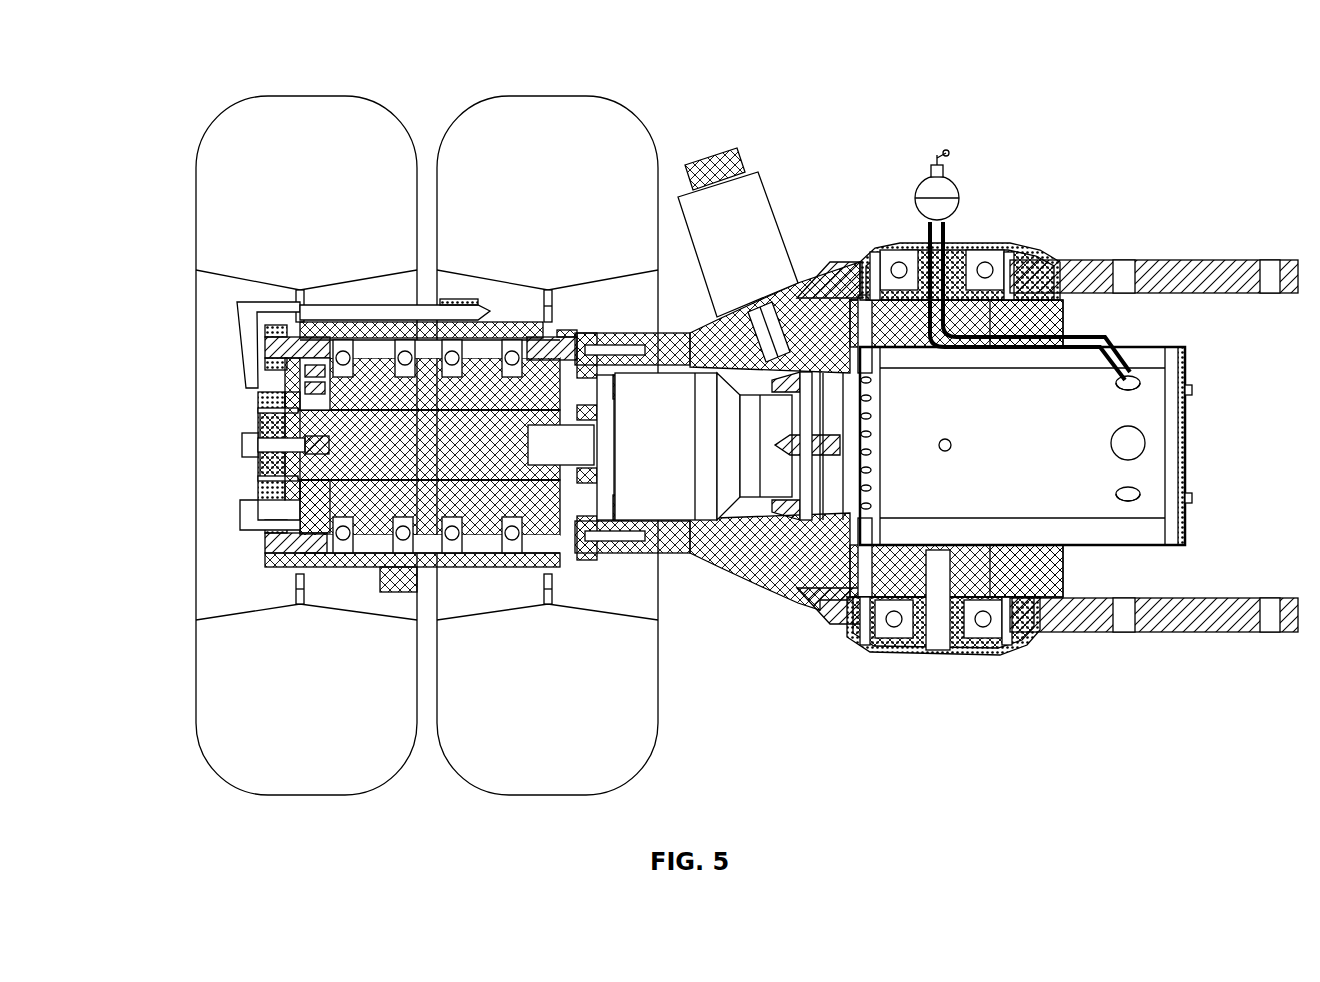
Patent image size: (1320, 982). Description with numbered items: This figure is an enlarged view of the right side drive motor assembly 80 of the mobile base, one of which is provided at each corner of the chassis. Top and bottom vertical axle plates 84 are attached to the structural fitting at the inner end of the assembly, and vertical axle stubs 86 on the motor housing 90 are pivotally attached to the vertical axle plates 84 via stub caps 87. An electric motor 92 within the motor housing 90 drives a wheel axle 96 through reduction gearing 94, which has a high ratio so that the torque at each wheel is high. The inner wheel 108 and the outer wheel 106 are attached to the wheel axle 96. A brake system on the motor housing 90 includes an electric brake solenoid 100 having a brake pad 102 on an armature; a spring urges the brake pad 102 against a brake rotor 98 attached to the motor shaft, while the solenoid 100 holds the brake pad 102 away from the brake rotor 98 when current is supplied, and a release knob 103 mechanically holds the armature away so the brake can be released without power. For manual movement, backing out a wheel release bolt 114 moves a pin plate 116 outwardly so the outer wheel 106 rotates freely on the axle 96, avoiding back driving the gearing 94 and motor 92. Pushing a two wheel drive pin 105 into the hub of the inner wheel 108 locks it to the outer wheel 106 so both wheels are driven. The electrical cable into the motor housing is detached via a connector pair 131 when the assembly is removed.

The drive motor assembly 80 is at (1208, 198).
The vertical axle plates 84 is at (1213, 268).
The vertical axle stubs 86 is at (1010, 247).
The stub caps 87 is at (968, 243).
The motor housing 90 is at (1055, 587).
The electric motor 92 is at (1130, 472).
The reduction gearing 94 is at (650, 490).
The wheel axle 96 is at (283, 500).
The brake rotor 98 is at (775, 512).
The electric brake solenoid 100 is at (760, 203).
The brake pad 102 is at (792, 300).
The release knob 103 is at (703, 157).
The two wheel drive pin 105 is at (370, 310).
The outer wheel 106 is at (322, 114).
The inner wheel 108 is at (552, 114).
The wheel release bolt 114 is at (242, 445).
The pin plate 116 is at (258, 398).
The connector pair 131 is at (930, 188).